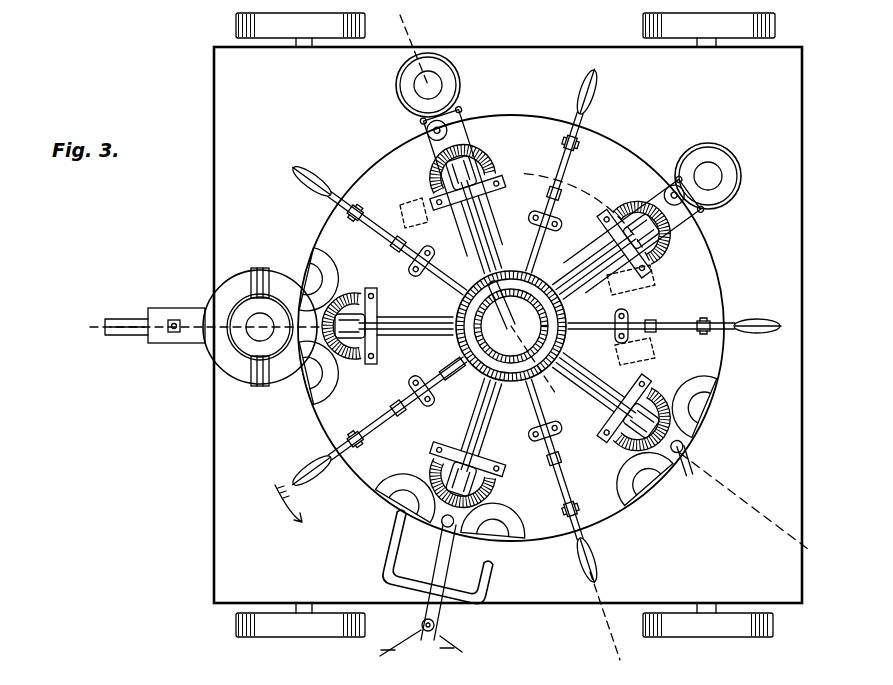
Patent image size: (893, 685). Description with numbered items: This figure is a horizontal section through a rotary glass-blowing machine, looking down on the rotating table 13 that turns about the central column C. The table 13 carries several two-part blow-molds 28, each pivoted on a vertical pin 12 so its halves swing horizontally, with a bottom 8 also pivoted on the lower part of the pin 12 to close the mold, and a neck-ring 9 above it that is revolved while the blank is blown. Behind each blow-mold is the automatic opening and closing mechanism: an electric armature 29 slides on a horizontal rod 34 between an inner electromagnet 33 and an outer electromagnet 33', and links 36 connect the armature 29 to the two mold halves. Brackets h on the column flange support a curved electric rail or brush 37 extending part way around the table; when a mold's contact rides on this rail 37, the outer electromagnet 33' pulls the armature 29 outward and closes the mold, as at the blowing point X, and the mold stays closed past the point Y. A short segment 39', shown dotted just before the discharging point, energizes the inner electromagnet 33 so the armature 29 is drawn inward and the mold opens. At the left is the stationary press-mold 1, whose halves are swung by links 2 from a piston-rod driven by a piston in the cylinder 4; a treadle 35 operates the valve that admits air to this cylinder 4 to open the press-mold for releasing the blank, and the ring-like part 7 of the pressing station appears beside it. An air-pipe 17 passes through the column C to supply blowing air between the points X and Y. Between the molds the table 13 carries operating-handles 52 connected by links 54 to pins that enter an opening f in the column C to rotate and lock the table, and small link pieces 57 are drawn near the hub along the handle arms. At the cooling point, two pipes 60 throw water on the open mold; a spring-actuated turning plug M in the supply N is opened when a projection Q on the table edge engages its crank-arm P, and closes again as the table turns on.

The press-mold 1 is at (509, 339).
The links 2 is at (75, 327).
The cylinder 4 is at (245, 283).
The pressing head 7 is at (250, 350).
The bottoms 8 is at (300, 395).
The neck-ring 9 is at (128, 333).
The pivotal pins 12 is at (438, 140).
The rotating table 13 is at (712, 280).
The air-pipe 17 is at (520, 337).
The blow-molds 28 is at (456, 95).
The electric armature 29 is at (488, 198).
The inner electromagnet 33 is at (443, 378).
The outer electromagnet 33' is at (516, 316).
The horizontal shaft or rod 34 is at (515, 462).
The treadle 35 is at (420, 470).
The links 36 is at (462, 150).
The curved electric rail or brush 37 is at (418, 210).
The short segment 39' is at (655, 353).
The link 57 is at (490, 330).
The operating-handles 52 is at (322, 183).
The links 54 is at (372, 236).
The pipes 60 is at (462, 595).
The column C is at (511, 326).
The point X is at (393, 85).
The point Y is at (708, 165).
The projections Q is at (440, 525).
The crank-arm P is at (428, 582).
The turning plug M is at (389, 661).
The supply N is at (445, 658).
The brackets h is at (545, 244).
The opening f is at (174, 335).